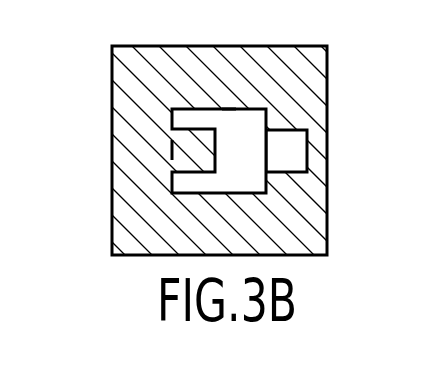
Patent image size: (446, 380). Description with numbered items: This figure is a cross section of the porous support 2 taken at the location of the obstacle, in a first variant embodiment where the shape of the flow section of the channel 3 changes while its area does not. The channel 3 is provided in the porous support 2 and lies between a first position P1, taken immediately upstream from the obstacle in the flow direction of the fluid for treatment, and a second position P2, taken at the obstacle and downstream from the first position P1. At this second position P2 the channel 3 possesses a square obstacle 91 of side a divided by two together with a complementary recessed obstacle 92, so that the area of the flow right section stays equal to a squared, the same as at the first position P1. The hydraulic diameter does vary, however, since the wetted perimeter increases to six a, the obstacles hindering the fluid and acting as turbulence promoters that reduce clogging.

The porous support 2 is at (317, 210).
The channel 3 is at (250, 167).
The square obstacle 91 is at (197, 118).
The complementary recessed obstacle 92 is at (286, 137).
The first position P1 is at (172, 150).
The second position P2 is at (229, 109).